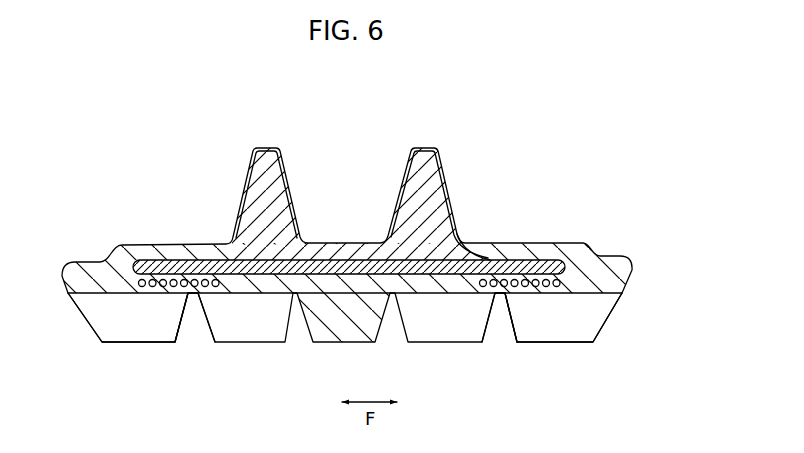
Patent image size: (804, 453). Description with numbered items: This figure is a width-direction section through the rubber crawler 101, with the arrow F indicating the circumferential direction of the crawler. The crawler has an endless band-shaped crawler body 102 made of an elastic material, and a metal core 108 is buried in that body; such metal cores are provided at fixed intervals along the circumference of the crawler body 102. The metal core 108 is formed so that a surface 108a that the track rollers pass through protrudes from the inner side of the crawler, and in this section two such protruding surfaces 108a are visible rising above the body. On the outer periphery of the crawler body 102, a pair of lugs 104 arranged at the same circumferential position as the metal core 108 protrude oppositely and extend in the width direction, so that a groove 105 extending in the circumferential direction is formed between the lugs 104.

The rubber crawler 101 is at (592, 231).
The crawler body 102 is at (133, 245).
The lug 104 is at (128, 346).
The groove 105 is at (195, 333).
The metal core 108 is at (443, 214).
The surface that track rollers pass through 108a is at (268, 147).